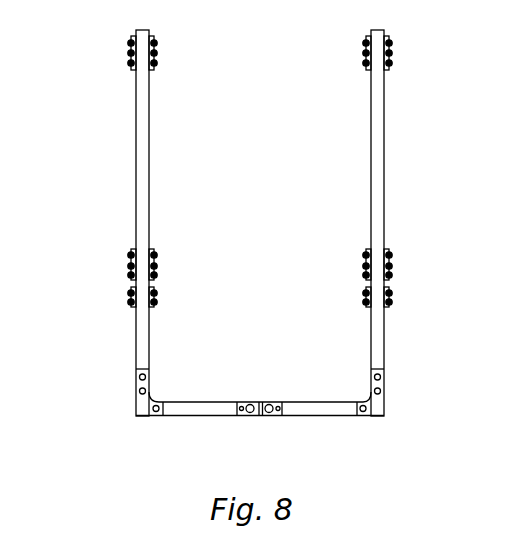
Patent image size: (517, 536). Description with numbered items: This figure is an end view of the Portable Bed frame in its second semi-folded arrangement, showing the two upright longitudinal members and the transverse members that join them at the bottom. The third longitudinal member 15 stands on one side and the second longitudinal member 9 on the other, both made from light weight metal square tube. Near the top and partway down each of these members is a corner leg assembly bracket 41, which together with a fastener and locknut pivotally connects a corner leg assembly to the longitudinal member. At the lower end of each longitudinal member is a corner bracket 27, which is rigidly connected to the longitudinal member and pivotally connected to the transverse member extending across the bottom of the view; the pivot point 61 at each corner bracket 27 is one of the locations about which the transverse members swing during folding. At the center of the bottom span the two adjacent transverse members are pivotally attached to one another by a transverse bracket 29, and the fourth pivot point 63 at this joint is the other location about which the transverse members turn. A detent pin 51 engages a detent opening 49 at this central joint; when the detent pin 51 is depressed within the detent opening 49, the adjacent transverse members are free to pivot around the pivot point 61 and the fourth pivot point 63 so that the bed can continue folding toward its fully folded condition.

The third longitudinal member 15 is at (136, 158).
The second longitudinal member 9 is at (384, 130).
The corner leg assembly bracket 41 is at (131, 278).
The corner bracket 27 is at (138, 412).
The pivot point 61 is at (157, 413).
The transverse bracket 29 is at (242, 415).
The fourth pivot point 63 is at (268, 415).
The detent opening 49 is at (240, 402).
The detent pin 51 is at (278, 402).